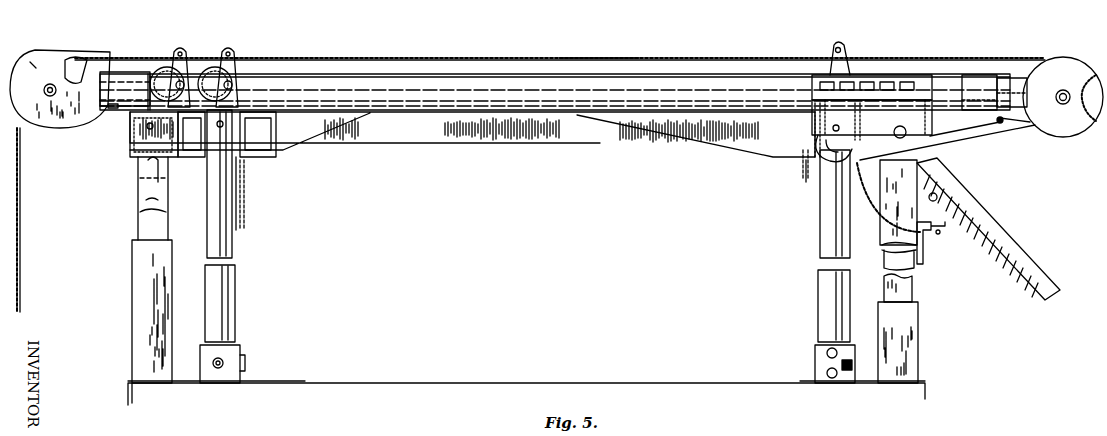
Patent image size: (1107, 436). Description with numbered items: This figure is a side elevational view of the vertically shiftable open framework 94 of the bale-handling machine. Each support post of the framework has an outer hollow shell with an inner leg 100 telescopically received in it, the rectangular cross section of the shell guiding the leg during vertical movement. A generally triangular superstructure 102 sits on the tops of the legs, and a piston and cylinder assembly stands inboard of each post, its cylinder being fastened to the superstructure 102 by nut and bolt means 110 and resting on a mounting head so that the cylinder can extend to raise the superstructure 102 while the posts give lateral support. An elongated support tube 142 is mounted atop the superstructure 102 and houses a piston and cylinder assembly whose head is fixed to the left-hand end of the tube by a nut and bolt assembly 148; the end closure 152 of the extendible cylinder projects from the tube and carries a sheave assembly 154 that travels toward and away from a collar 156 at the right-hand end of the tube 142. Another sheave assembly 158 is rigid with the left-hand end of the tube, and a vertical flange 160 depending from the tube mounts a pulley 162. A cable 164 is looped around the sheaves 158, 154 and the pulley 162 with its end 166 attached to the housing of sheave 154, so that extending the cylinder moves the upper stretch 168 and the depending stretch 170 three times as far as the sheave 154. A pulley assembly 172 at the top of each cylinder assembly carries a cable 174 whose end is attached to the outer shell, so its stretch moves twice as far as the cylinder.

The open framework 94 is at (724, 74).
The inner leg 100 is at (900, 288).
The superstructure 102 is at (412, 135).
The nut and bolt means 110 is at (224, 4).
The support tube 142 is at (399, 78).
The nut and bolt assembly 148 is at (113, 112).
The end closure 152 is at (1012, 78).
The sheave assembly 154 is at (1074, 62).
The collar 156 is at (970, 77).
The sheave assembly 158 is at (39, 50).
The vertical flange 160 is at (762, 158).
The pulley 162 is at (830, 175).
The cable 164 is at (493, 60).
The cable end 166 is at (992, 135).
The upper stretch 168 is at (597, 58).
The cable stretch 170 is at (20, 198).
The pulley assembly 172 is at (196, 2).
The cable 174 is at (246, 188).